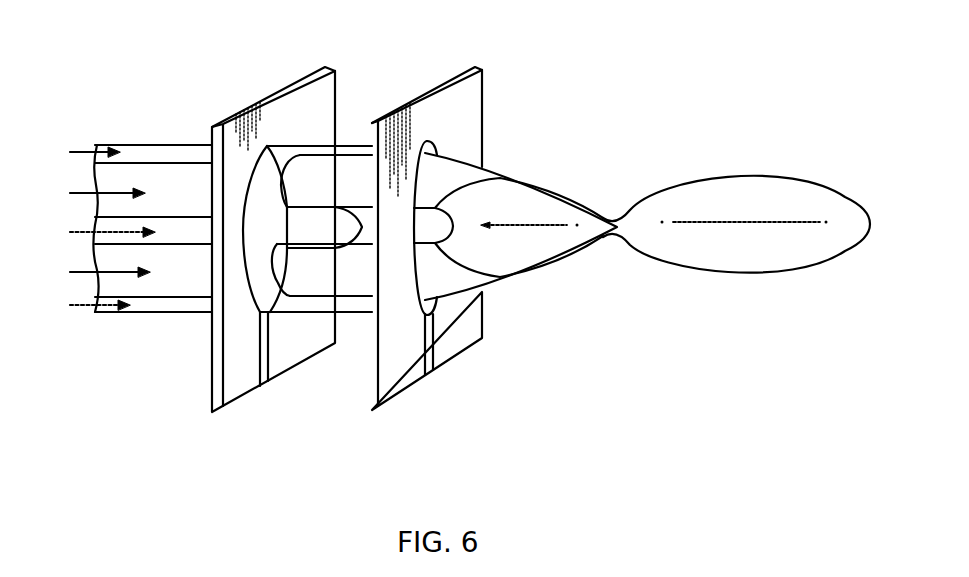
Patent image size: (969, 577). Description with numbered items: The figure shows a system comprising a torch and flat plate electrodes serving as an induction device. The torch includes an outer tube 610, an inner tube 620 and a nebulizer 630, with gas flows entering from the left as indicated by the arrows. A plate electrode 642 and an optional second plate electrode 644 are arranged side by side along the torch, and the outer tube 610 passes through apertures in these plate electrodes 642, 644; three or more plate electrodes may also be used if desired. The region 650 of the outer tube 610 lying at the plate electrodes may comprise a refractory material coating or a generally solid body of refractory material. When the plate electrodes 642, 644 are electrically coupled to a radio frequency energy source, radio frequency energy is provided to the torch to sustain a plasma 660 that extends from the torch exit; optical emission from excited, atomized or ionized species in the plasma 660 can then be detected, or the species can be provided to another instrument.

The outer tube 610 is at (128, 145).
The inner tube 620 is at (193, 297).
The nebulizer 630 is at (185, 245).
The plate electrode 642 is at (307, 77).
The second plate electrode 644 is at (483, 93).
The region of the outer tube 650 is at (212, 437).
The plasma 660 is at (727, 258).